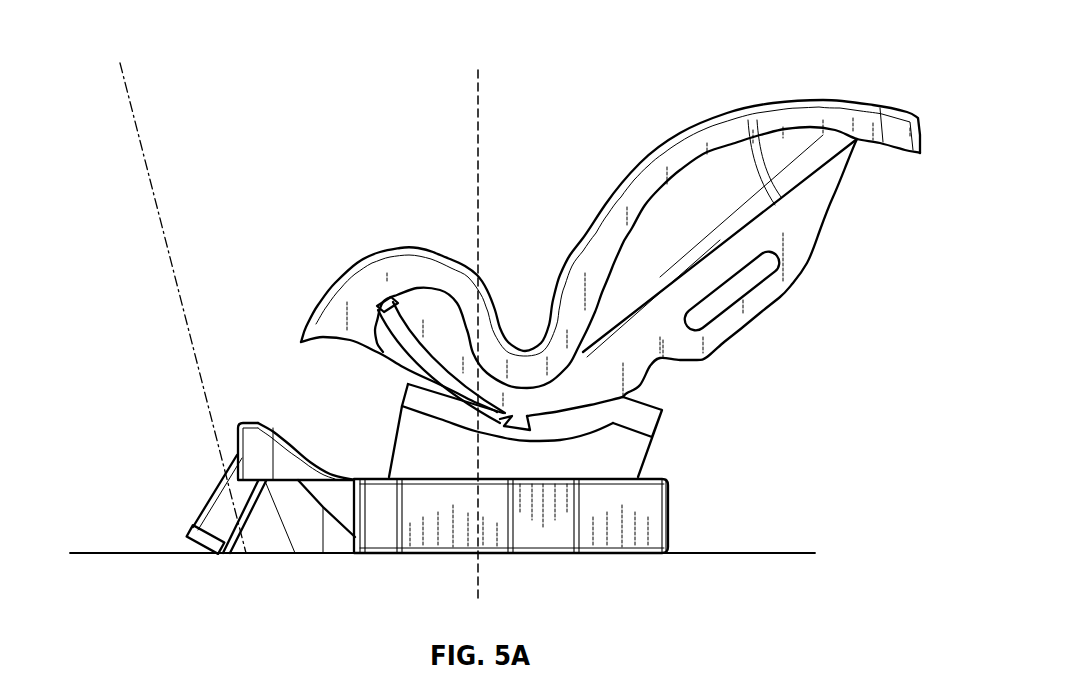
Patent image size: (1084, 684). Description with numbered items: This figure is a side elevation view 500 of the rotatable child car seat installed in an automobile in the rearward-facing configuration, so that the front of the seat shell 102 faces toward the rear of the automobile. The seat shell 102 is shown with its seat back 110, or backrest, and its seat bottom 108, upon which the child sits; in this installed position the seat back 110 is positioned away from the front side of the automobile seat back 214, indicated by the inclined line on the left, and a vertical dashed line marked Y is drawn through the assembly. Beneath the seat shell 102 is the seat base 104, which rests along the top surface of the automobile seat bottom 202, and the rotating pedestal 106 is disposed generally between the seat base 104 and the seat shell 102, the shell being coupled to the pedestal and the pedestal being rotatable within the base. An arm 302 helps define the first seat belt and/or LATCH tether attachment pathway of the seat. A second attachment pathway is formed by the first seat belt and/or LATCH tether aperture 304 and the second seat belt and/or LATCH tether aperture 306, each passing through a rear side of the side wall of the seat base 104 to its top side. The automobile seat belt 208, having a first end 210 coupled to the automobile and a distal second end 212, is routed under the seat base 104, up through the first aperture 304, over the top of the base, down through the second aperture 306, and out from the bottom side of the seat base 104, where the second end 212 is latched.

The side elevation view 500 is at (868, 65).
The seat shell 102 is at (852, 152).
The seat base 104 is at (670, 515).
The rotating pedestal 106 is at (648, 458).
The seat bottom 108 is at (400, 293).
The seat back 110 is at (795, 177).
The automobile seat bottom 202 is at (778, 552).
The automobile seat belt 208 is at (308, 543).
The first end of seat belt 210 is at (253, 555).
The second end of seat belt 212 is at (183, 528).
The automobile seat back 214 is at (127, 95).
The arm 302 is at (793, 242).
The first seat belt and/or LATCH tether aperture 304 is at (287, 477).
The second seat belt and/or LATCH tether aperture 306 is at (270, 424).
The axis Y is at (480, 92).